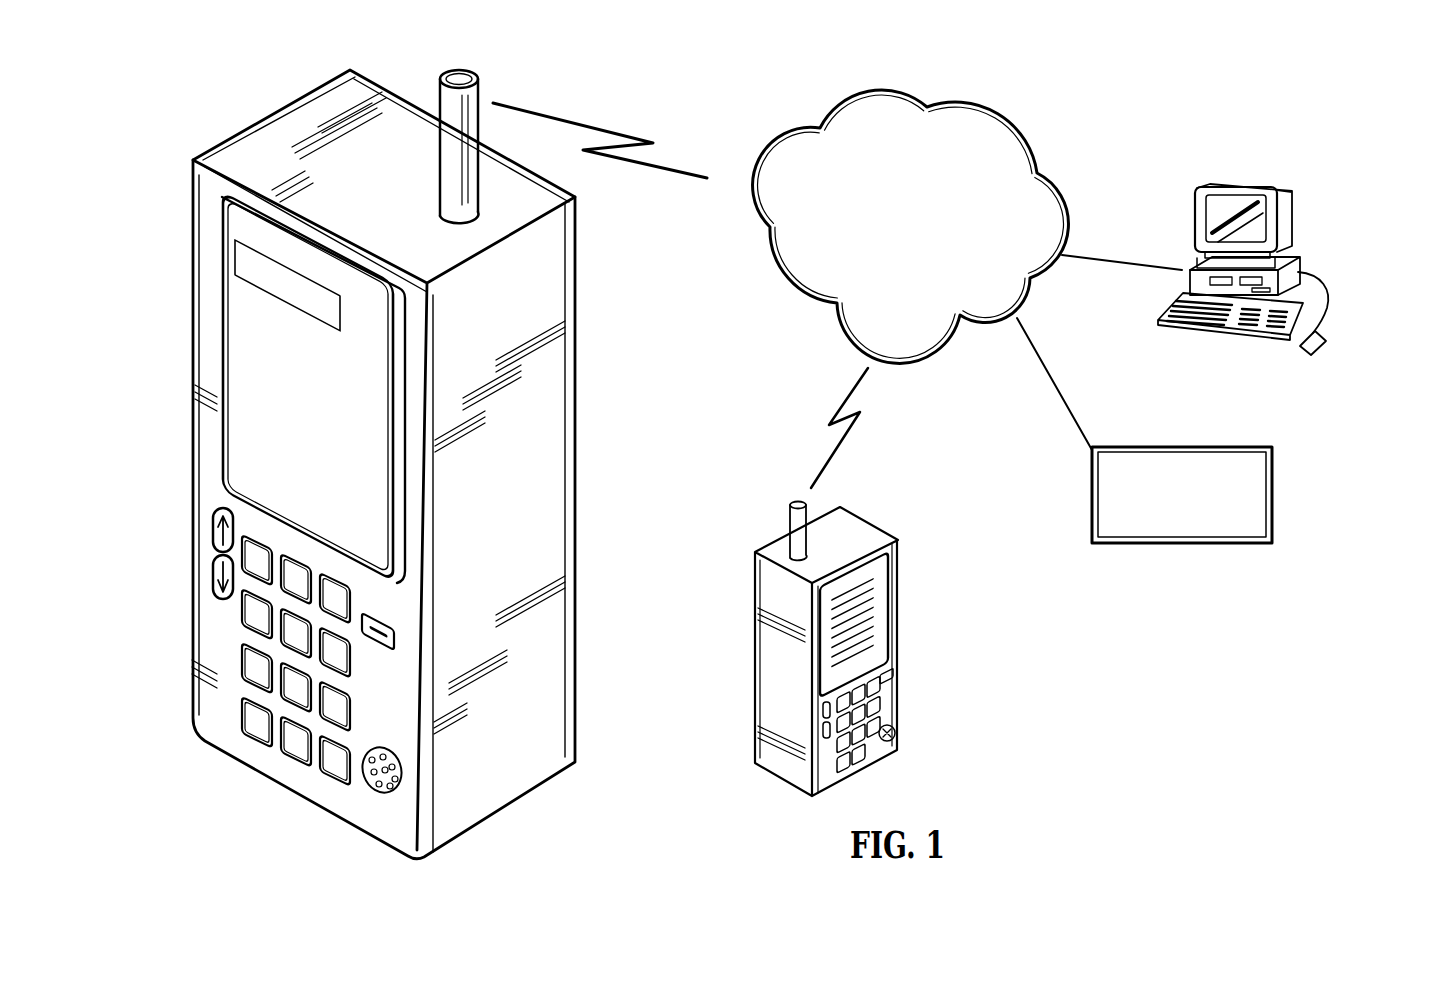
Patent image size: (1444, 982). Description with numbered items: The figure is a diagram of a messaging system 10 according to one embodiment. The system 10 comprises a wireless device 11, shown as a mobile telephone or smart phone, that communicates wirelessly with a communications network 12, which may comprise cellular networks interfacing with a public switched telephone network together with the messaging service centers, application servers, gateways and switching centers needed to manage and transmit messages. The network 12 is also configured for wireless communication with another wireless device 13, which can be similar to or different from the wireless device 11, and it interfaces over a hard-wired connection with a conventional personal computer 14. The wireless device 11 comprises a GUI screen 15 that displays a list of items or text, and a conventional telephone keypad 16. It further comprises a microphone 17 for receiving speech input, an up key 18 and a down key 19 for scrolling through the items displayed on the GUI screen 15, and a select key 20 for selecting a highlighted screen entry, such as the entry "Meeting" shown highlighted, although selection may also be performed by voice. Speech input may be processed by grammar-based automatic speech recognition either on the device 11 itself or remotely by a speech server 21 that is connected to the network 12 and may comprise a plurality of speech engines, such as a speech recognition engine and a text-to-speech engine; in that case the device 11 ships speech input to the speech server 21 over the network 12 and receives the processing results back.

The messaging system 10 is at (806, 65).
The wireless device 11 is at (574, 673).
The communications network 12 is at (995, 112).
The wireless device 13 is at (838, 505).
The personal computer 14 is at (1222, 187).
The GUI screen 15 is at (397, 510).
The telephone keypad 16 is at (254, 778).
The microphone 17 is at (372, 787).
The up key 18 is at (221, 508).
The down key 19 is at (223, 598).
The select key 20 is at (390, 626).
The speech server 21 is at (1190, 448).